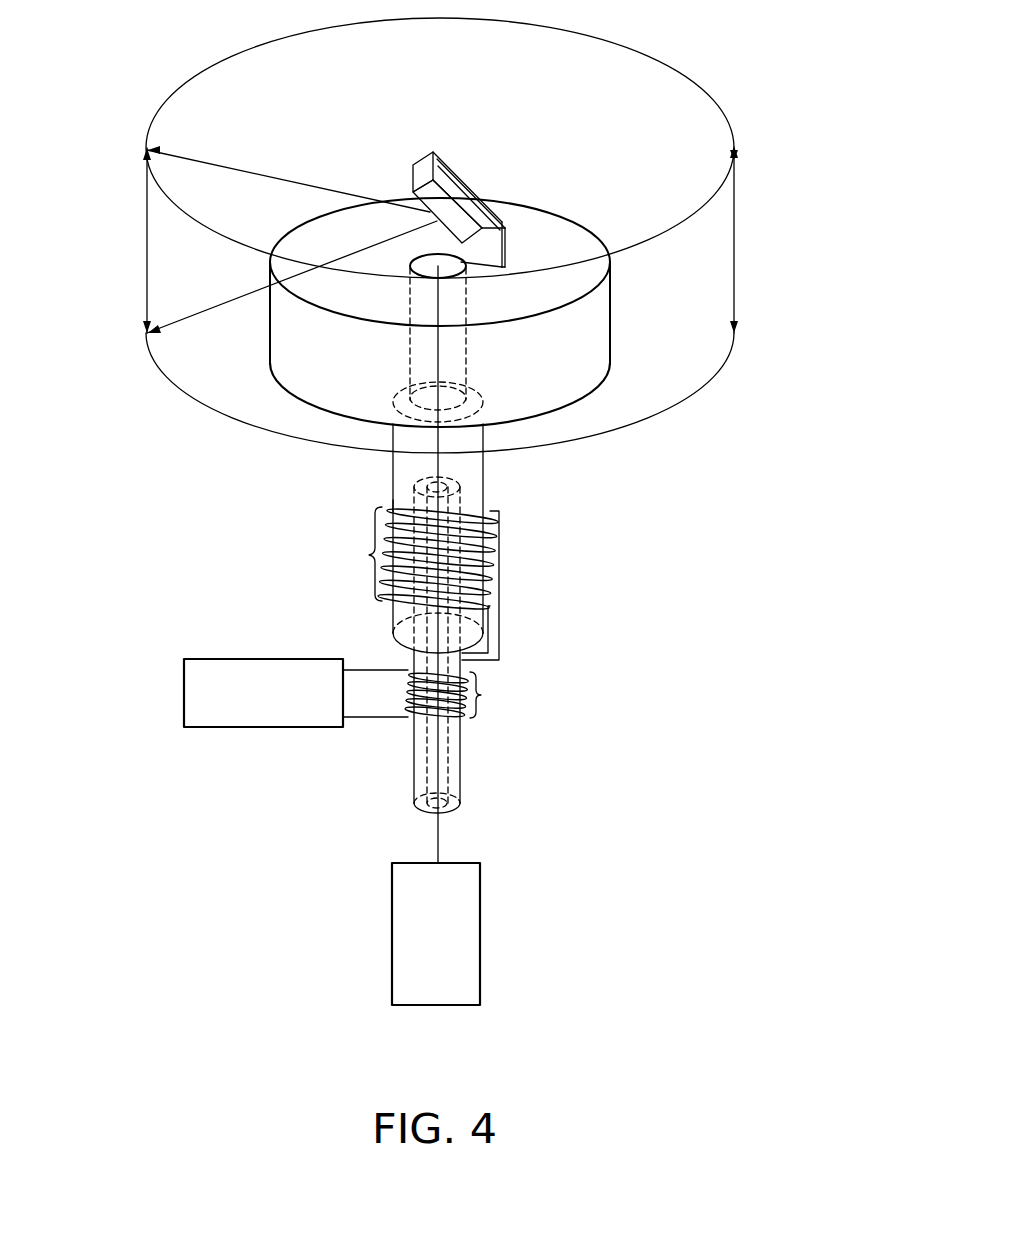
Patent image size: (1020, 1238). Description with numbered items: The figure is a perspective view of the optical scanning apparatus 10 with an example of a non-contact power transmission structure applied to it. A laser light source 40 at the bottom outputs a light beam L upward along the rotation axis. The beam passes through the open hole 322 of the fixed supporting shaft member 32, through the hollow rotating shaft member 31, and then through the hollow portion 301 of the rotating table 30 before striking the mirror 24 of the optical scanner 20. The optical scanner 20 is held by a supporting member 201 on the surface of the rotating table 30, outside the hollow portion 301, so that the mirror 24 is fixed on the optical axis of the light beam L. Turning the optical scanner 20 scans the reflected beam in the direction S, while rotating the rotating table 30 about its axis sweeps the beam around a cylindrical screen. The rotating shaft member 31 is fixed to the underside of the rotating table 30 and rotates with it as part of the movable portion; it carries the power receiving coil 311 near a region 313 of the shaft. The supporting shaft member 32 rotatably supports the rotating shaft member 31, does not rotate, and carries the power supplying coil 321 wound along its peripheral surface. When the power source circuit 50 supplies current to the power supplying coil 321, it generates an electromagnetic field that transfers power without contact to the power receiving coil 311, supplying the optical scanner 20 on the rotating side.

The optical scanning apparatus 10 is at (205, 431).
The optical scanner 20 is at (480, 167).
The mirror 24 is at (447, 211).
The supporting member 201 is at (485, 204).
The hollow portion 301 is at (424, 266).
The rotating table 30 is at (598, 325).
The rotating shaft member 31 is at (473, 490).
The power receiving coil 311 is at (353, 583).
The shaft recess 313 is at (392, 506).
The supporting shaft member 32 is at (455, 775).
The power supplying coil 321 is at (556, 694).
The open hole 322 is at (450, 765).
The laser light source 40 is at (392, 925).
The power source circuit 50 is at (250, 728).
The light beam L is at (446, 842).
The scan direction S is at (146, 256).